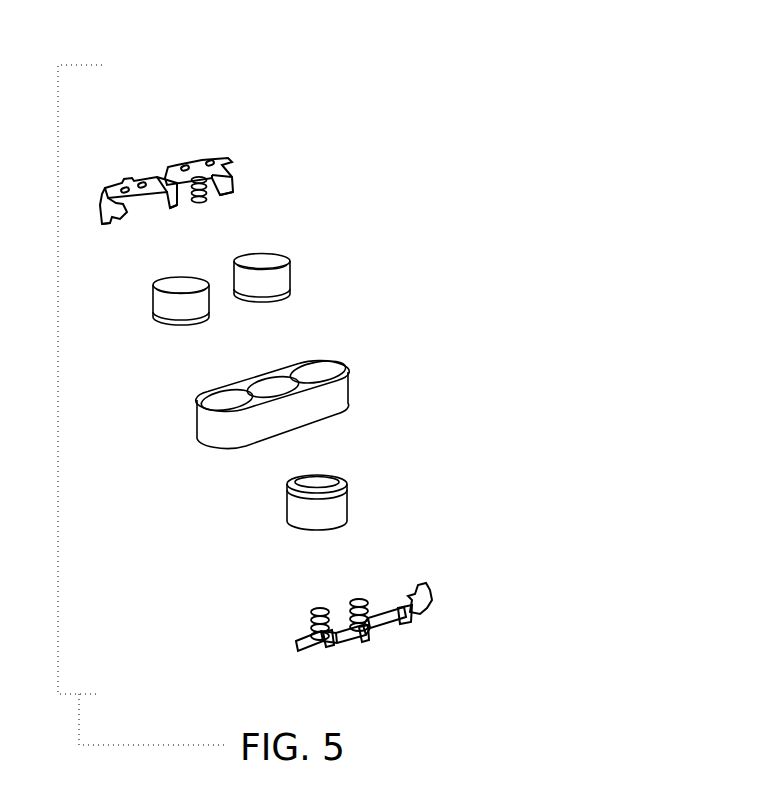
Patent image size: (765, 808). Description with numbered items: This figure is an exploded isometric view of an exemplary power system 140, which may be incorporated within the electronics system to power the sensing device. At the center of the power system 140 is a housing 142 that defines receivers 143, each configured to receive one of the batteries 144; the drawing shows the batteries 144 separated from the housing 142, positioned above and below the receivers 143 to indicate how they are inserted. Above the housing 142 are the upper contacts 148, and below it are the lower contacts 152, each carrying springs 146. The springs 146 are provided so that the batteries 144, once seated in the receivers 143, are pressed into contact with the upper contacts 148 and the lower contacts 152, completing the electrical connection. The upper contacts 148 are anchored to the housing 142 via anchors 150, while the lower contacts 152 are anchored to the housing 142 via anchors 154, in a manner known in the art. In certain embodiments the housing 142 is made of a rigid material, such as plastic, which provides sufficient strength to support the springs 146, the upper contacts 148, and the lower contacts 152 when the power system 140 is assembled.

The power system 140 is at (418, 120).
The housing 142 is at (340, 400).
The receivers 143 is at (267, 383).
The batteries 144 is at (163, 310).
The springs 146 is at (208, 197).
The upper contacts 148 is at (138, 171).
The anchors 150 is at (237, 182).
The lower contacts 152 is at (302, 643).
The anchors 154 is at (433, 590).